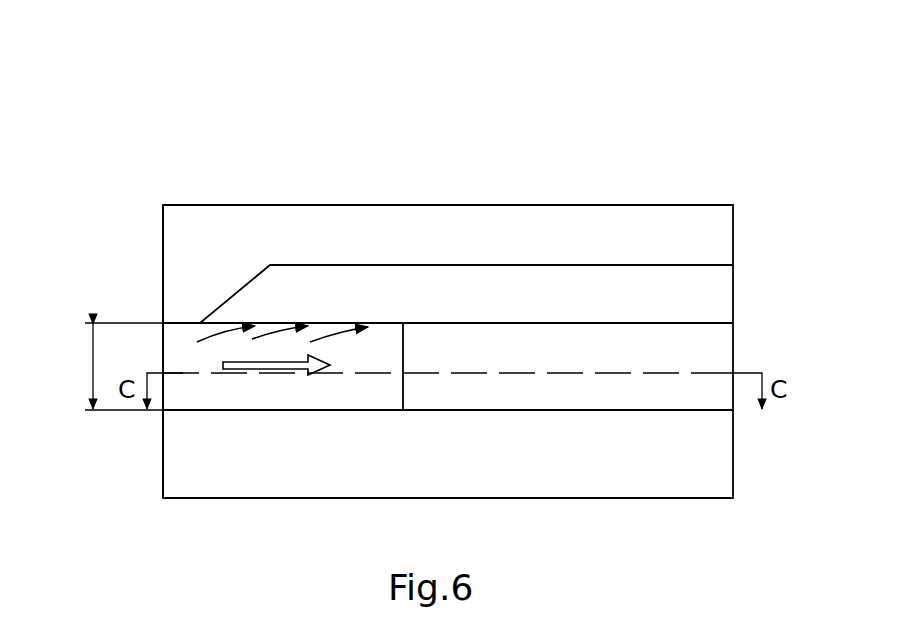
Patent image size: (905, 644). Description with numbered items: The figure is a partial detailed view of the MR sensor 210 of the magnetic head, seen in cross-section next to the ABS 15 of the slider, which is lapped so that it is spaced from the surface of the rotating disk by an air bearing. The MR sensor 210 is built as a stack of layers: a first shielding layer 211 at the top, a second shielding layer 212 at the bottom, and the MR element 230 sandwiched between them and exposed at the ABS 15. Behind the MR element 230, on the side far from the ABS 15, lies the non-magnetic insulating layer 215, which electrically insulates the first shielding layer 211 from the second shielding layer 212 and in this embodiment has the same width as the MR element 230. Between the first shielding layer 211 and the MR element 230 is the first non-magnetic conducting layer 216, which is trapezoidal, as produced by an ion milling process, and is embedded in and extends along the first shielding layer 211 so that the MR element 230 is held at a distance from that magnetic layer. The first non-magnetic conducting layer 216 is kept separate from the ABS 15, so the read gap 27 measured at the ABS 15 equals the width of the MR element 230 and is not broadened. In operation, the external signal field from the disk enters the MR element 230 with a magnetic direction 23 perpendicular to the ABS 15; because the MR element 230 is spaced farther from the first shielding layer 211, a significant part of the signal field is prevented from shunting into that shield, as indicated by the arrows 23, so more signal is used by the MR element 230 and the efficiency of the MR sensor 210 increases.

The MR sensor 210 is at (103, 127).
The first shielding layer 211 is at (683, 239).
The first non-magnetic conducting layer 216 is at (683, 299).
The non-magnetic insulating layer 215 is at (685, 349).
The second shielding layer 212 is at (683, 473).
The MR element 230 is at (190, 338).
The magnetic direction 23 is at (282, 350).
The read gap 27 is at (109, 366).
The ABS 15 is at (164, 473).